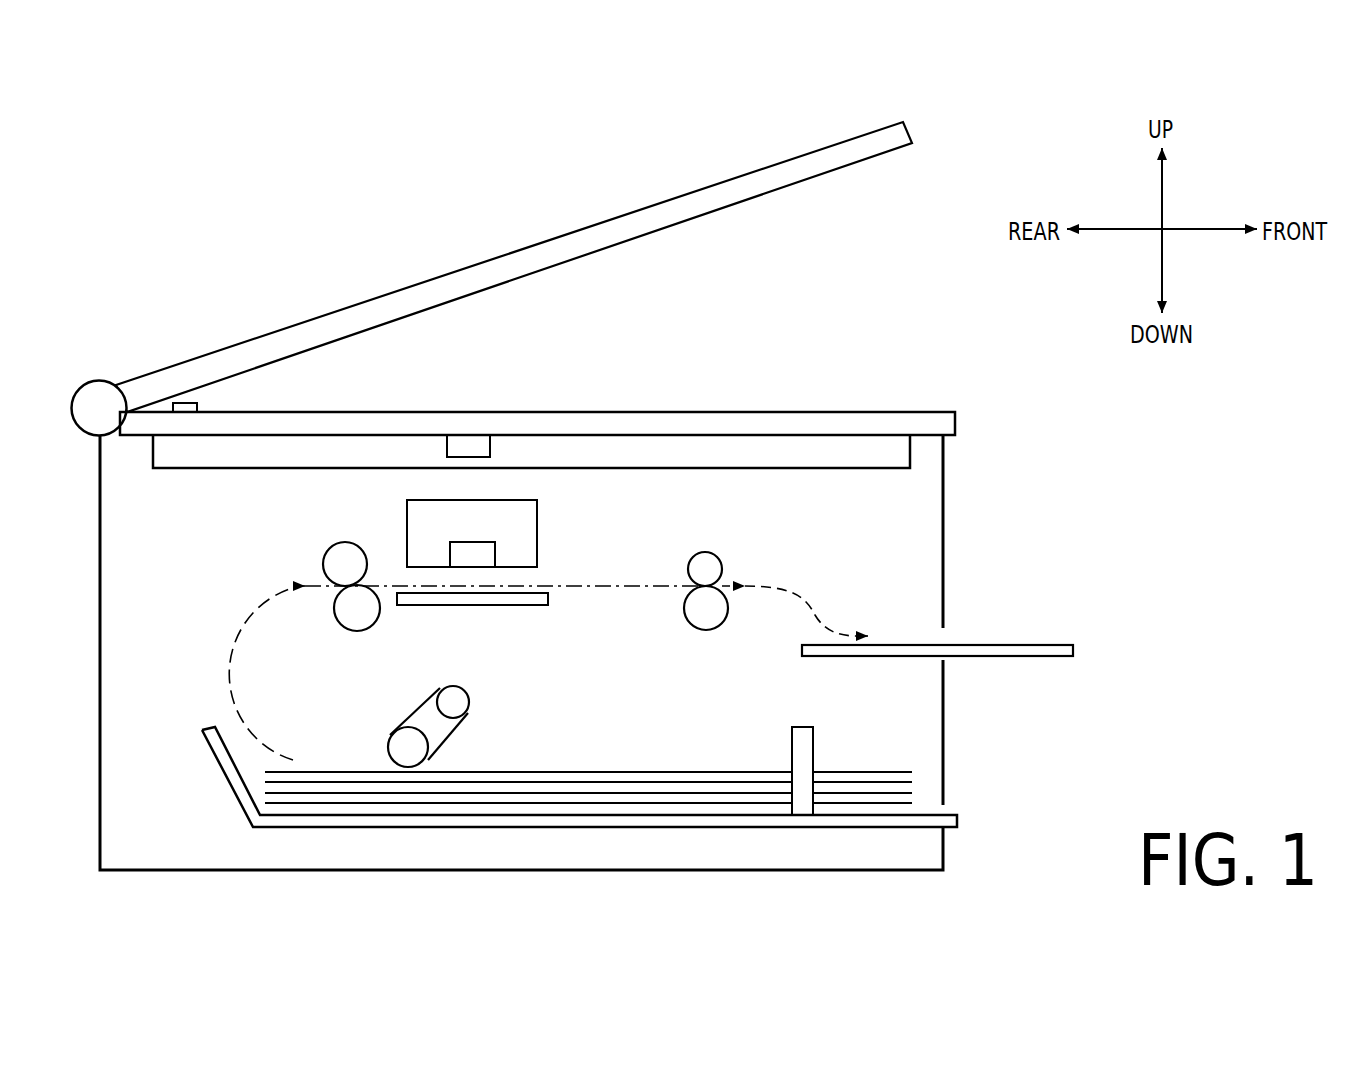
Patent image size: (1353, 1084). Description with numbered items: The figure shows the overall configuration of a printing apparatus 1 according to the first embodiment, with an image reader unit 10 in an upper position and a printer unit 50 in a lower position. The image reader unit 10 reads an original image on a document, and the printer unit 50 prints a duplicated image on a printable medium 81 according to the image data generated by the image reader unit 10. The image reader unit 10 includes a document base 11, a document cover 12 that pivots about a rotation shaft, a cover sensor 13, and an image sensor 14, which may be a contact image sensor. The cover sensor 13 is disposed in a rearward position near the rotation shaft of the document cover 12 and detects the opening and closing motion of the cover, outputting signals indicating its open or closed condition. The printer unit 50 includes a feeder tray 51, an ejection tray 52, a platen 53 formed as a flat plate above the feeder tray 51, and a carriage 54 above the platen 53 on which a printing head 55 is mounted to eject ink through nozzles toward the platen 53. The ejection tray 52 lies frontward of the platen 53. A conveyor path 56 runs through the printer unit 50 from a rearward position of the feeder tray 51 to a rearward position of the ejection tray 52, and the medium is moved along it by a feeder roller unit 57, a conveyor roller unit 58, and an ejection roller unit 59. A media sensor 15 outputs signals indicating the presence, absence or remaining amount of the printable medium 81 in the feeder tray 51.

The printing apparatus 1 is at (560, 95).
The image reader unit 10 is at (306, 316).
The document base 11 is at (497, 412).
The document cover 12 is at (405, 288).
The cover sensor 13 is at (181, 403).
The image sensor 14 is at (490, 447).
The media sensor 15 is at (792, 732).
The printer unit 50 is at (955, 530).
The feeder tray 51 is at (577, 828).
The ejection tray 52 is at (1045, 644).
The platen 53 is at (475, 606).
The carriage 54 is at (537, 512).
The printing head 55 is at (495, 553).
The conveyor path 56 is at (225, 626).
The feeder roller unit 57 is at (470, 700).
The conveyor roller unit 58 is at (330, 547).
The ejection roller unit 59 is at (722, 566).
The printable medium 81 is at (648, 770).